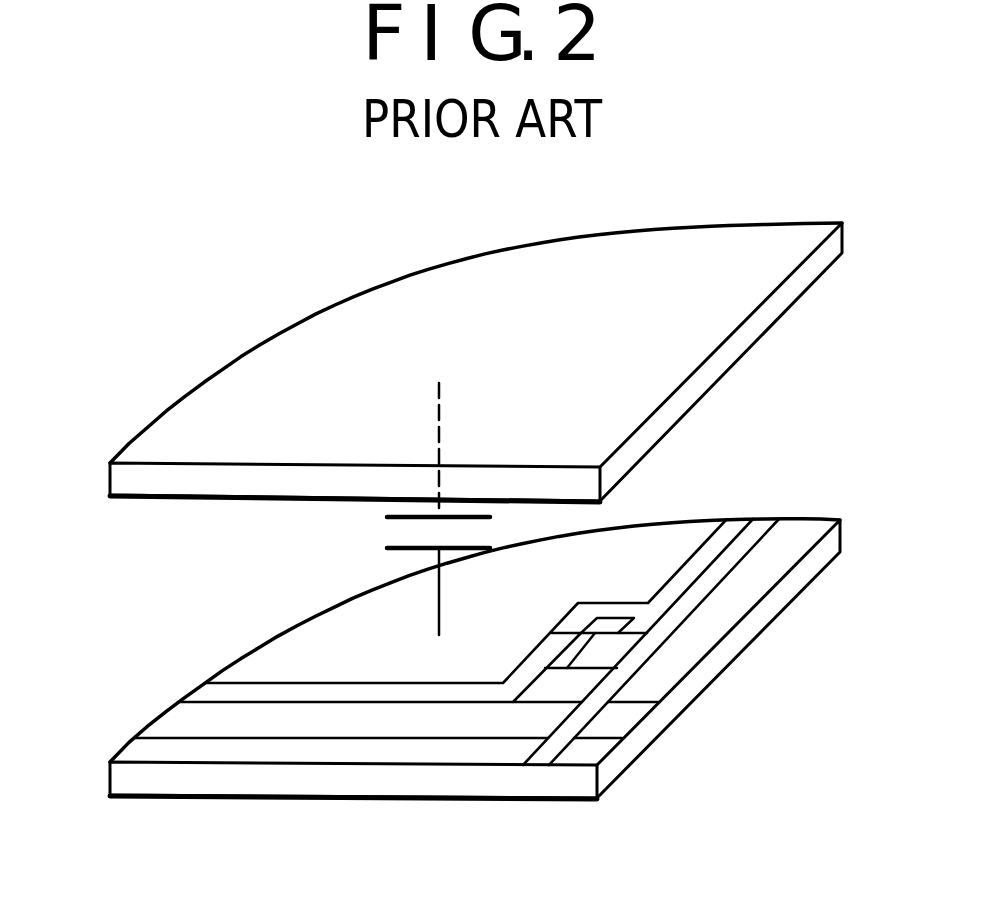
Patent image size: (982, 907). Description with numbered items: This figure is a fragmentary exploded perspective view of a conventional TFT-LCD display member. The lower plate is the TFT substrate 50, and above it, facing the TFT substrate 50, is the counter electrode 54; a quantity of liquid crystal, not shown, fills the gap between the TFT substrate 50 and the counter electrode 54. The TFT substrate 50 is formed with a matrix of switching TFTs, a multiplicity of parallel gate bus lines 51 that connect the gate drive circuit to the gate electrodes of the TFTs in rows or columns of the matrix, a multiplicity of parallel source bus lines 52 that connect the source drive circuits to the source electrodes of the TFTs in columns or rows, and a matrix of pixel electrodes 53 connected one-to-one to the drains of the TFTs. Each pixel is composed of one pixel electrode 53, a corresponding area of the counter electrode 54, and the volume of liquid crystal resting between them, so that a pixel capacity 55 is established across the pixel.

The TFT substrate 50 is at (177, 778).
The gate bus lines 51 is at (638, 718).
The source bus lines 52 is at (760, 527).
The pixel electrodes 53 is at (372, 628).
The counter electrode 54 is at (168, 477).
The pixel capacity 55 is at (393, 517).